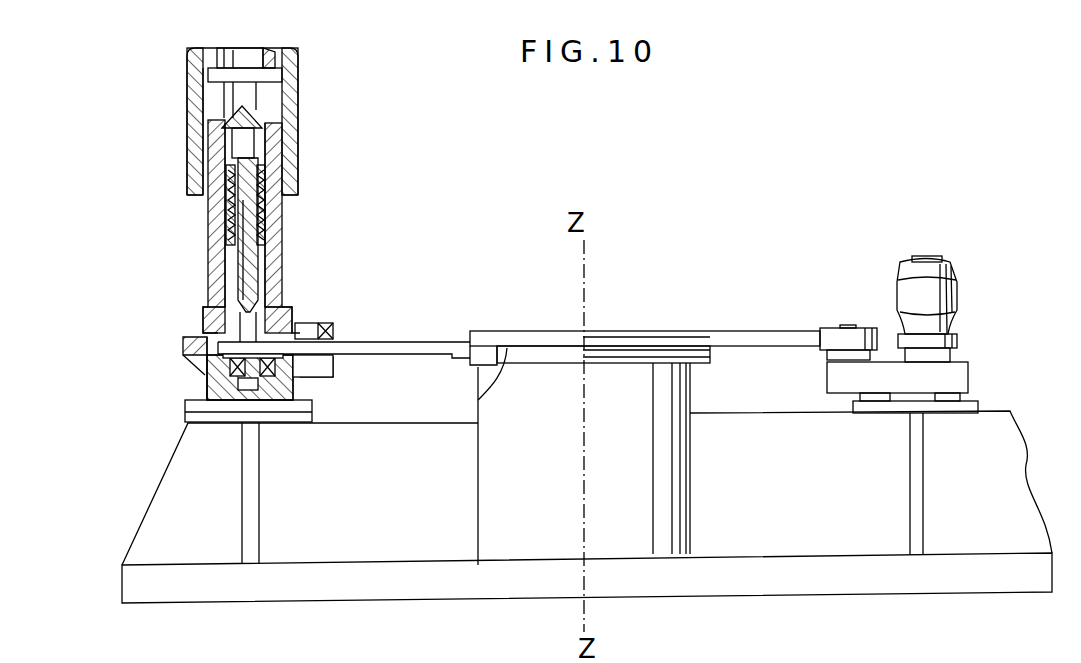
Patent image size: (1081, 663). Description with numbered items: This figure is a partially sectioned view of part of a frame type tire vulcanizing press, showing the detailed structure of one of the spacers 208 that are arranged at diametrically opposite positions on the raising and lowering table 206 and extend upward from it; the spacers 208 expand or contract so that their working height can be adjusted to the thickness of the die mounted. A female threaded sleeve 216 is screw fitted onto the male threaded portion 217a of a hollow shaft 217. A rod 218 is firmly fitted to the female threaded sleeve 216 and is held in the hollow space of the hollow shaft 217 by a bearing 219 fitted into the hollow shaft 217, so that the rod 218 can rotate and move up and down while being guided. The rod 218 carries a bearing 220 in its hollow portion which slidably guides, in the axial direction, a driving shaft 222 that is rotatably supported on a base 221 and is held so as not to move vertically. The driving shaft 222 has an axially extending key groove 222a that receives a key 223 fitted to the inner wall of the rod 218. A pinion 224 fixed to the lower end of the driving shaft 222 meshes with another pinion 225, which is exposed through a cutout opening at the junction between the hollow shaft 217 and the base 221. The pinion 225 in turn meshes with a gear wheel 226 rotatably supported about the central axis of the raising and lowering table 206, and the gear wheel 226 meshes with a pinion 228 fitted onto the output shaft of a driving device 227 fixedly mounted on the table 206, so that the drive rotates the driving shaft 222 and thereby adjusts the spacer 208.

The raising and lowering table 206 is at (158, 488).
The spacer 208 is at (178, 182).
The female threaded sleeve 216 is at (299, 125).
The hollow shaft 217 is at (288, 312).
The male threaded portion 217a is at (268, 229).
The rod 218 is at (265, 101).
The bearing 219 is at (224, 223).
The bearing 220 is at (262, 220).
The base 221 is at (183, 345).
The driving shaft 222 is at (254, 283).
The key groove 222a is at (257, 262).
The key 223 is at (258, 240).
The pinion 224 is at (207, 364).
The pinion 225 is at (340, 341).
The gear wheel 226 is at (418, 340).
The driving device 227 is at (958, 325).
The pinion 228 is at (824, 328).